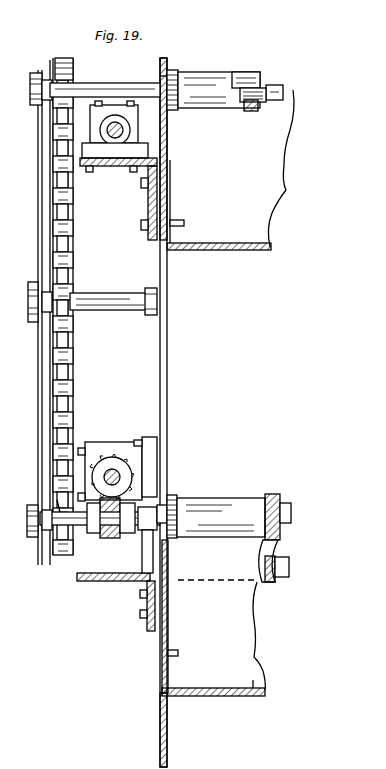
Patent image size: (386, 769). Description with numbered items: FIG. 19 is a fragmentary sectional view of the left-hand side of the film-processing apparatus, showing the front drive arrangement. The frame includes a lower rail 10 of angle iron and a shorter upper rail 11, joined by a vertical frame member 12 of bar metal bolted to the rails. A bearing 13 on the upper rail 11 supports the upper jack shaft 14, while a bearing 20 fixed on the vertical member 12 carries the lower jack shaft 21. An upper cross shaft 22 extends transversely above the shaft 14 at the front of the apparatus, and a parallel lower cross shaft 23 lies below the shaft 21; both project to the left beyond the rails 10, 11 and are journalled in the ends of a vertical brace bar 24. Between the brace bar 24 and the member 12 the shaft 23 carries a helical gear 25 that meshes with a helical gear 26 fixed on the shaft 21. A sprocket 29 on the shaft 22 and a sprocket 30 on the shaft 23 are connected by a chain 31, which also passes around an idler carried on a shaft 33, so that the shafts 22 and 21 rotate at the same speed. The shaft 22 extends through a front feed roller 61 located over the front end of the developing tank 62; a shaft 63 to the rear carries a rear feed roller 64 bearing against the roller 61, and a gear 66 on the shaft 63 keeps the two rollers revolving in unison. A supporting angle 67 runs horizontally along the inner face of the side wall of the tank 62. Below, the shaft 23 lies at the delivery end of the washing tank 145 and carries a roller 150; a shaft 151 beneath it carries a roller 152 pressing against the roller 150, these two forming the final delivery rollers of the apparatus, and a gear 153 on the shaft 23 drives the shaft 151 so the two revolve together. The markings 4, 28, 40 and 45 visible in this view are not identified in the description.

The sprocket 4 is at (30, 304).
The lower rails 10 is at (112, 582).
The upper rails 11 is at (148, 200).
The vertical frame members 12 is at (166, 372).
The bearings 13 is at (135, 151).
The upper jack shaft 14 is at (122, 133).
The bearings 20 is at (110, 432).
The lower jack shaft 21 is at (118, 474).
The upper cross shaft 22 is at (80, 83).
The lower cross shaft 23 is at (74, 528).
The vertical brace bar 24 is at (38, 372).
The helical gear 25 is at (110, 540).
The helical gear 26 is at (130, 470).
The tube 28 is at (170, 62).
The sprocket 29 is at (63, 70).
The sprocket 30 is at (60, 510).
The chain 31 is at (74, 378).
The shaft 33 is at (118, 290).
The frame member 40 is at (4, 609).
The frame member 45 is at (4, 661).
The front feed roller 61 is at (262, 88).
The developing tank 62 is at (222, 250).
The shaft 63 is at (248, 111).
The rear feed roller 64 is at (237, 72).
The gear 66 is at (160, 76).
The supporting angle 67 is at (227, 176).
The washing tank 145 is at (248, 692).
The roller 150 is at (284, 486).
The shaft 151 is at (288, 577).
The roller 152 is at (262, 560).
The gear 153 is at (182, 498).